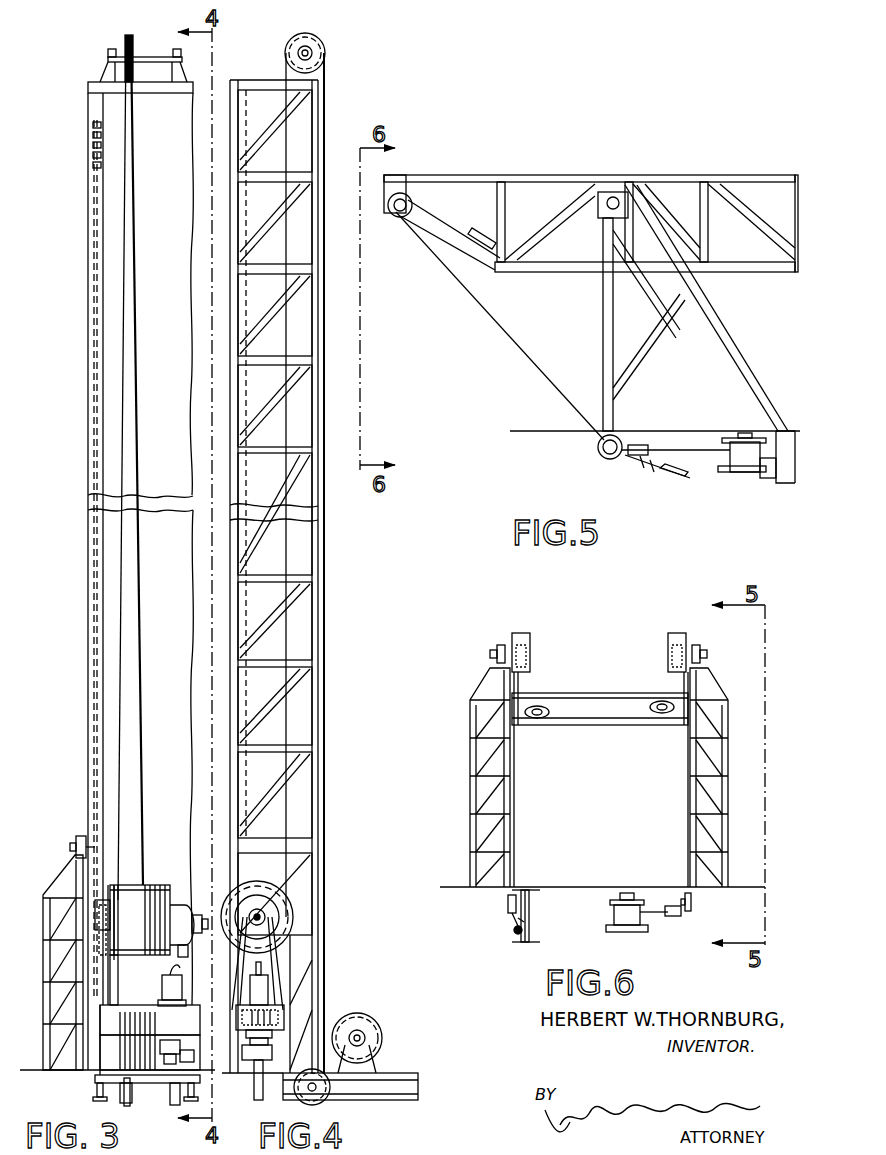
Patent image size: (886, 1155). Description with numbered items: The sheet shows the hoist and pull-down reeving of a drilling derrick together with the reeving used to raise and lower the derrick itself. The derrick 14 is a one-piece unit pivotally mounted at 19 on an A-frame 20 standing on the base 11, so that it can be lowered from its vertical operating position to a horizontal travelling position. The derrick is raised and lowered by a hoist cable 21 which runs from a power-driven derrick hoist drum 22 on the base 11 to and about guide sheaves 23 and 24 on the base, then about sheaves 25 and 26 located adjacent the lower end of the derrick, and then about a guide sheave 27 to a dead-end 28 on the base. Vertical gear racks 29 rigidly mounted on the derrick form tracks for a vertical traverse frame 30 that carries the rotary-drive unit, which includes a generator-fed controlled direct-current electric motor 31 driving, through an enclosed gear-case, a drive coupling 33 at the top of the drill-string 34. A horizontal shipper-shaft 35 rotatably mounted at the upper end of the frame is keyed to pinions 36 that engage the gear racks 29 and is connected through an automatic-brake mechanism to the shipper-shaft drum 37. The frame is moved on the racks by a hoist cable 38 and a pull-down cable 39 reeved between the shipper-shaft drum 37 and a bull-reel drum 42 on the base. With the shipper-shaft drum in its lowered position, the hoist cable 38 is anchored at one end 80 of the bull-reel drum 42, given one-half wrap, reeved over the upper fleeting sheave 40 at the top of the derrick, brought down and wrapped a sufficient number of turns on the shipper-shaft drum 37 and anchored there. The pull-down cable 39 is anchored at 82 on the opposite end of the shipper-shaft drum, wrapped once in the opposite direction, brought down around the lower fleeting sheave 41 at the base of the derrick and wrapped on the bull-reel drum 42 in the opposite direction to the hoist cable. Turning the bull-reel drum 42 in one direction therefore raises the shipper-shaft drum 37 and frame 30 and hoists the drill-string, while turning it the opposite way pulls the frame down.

In FIG. 4, the base 11 is at (403, 1073).
In FIG. 5, the base 11 is at (528, 431).
In FIG. 6, the base 11 is at (573, 887).
In FIG. 3, the derrick 14 is at (88, 569).
In FIG. 4, the derrick 14 is at (318, 717).
In FIG. 5, the derrick 14 is at (528, 176).
In FIG. 6, the derrick 14 is at (668, 657).
In FIG. 3, the pivotal mounting 19 is at (58, 852).
In FIG. 5, the pivotal mounting 19 is at (612, 192).
In FIG. 6, the pivotal mounting 19 is at (497, 654).
In FIG. 3, the A-frame 20 is at (45, 897).
In FIG. 5, the A-frame 20 is at (708, 344).
In FIG. 6, the A-frame 20 is at (472, 780).
In FIG. 5, the hoist cable 21 is at (440, 226).
In FIG. 6, the hoist cable 21 is at (596, 727).
In FIG. 5, the derrick hoist drum 22 is at (740, 460).
In FIG. 6, the derrick hoist drum 22 is at (625, 930).
In FIG. 5, the guide sheave 23 is at (640, 445).
In FIG. 6, the guide sheave 23 is at (672, 907).
In FIG. 5, the guide sheave 24 is at (600, 450).
In FIG. 6, the guide sheave 24 is at (692, 907).
In FIG. 5, the sheave 25 is at (399, 216).
In FIG. 6, the sheave 25 is at (532, 658).
In FIG. 5, the sheave 26 is at (490, 248).
In FIG. 6, the sheave 26 is at (533, 720).
In FIG. 6, the guide sheave 27 is at (508, 907).
In FIG. 5, the dead-end 28 is at (660, 475).
In FIG. 6, the dead-end 28 is at (518, 932).
In FIG. 3, the vertical gear racks 29 is at (97, 148).
In FIG. 4, the vertical gear racks 29 is at (262, 130).
In FIG. 3, the vertical traverse frame 30 is at (100, 1007).
In FIG. 3, the electric motor 31 is at (170, 950).
In FIG. 3, the drive coupling 33 is at (180, 1057).
In FIG. 3, the drill-string 34 is at (175, 1095).
In FIG. 4, the drill-string 34 is at (256, 1084).
In FIG. 3, the shipper-shaft 35 is at (195, 907).
In FIG. 4, the shipper-shaft 35 is at (262, 917).
In FIG. 3, the pinions 36 is at (95, 917).
In FIG. 3, the shipper-shaft drum 37 is at (138, 895).
In FIG. 4, the shipper-shaft drum 37 is at (285, 922).
In FIG. 3, the hoist cable 38 is at (118, 774).
In FIG. 4, the hoist cable 38 is at (282, 642).
In FIG. 3, the pull-down cable 39 is at (122, 974).
In FIG. 4, the pull-down cable 39 is at (290, 1022).
In FIG. 3, the upper fleeting sheave 40 is at (125, 42).
In FIG. 4, the upper fleeting sheave 40 is at (322, 52).
In FIG. 3, the lower fleeting sheave 41 is at (100, 1095).
In FIG. 4, the lower fleeting sheave 41 is at (314, 1106).
In FIG. 3, the bull-reel drum 42 is at (95, 1080).
In FIG. 4, the bull-reel drum 42 is at (362, 1030).
In FIG. 3, the anchored end of hoist cable 80 is at (105, 1042).
In FIG. 3, the anchor point of pull-down cable 82 is at (116, 885).